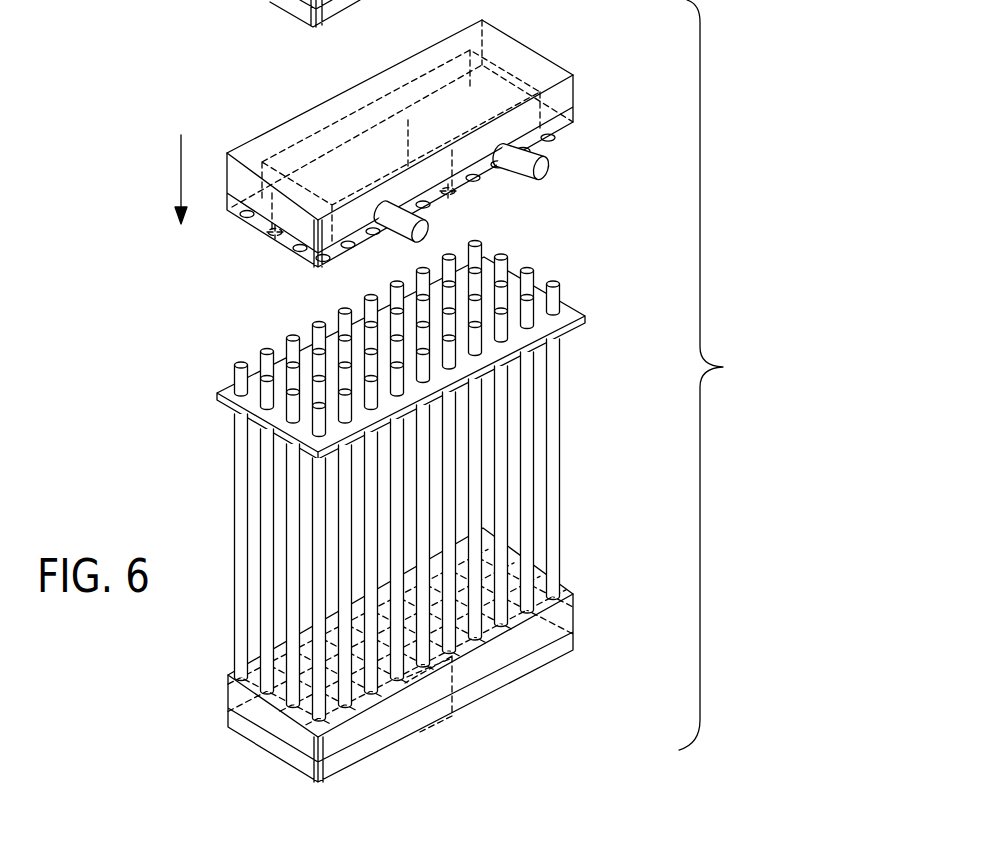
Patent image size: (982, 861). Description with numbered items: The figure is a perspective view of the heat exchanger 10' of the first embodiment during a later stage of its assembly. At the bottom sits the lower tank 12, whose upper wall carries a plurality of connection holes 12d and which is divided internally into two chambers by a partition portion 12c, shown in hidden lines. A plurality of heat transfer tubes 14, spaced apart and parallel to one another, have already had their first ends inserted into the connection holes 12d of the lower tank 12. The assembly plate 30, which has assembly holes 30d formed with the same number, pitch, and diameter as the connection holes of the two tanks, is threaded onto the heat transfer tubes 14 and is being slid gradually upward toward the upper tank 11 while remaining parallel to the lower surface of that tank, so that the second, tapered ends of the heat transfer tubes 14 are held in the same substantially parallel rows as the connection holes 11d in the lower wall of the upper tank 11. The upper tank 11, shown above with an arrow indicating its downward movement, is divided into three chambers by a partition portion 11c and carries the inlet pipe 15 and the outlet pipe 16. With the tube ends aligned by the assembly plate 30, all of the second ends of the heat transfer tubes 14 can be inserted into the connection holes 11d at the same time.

The heat exchanger 10' is at (432, 375).
The upper tank 11 is at (453, 174).
The partition portion 11c is at (293, 150).
The connection holes 11d is at (577, 122).
The inlet pipe 15 is at (401, 237).
The outlet pipe 16 is at (552, 166).
The assembly plate 30 is at (584, 318).
The assembly holes 30d is at (560, 303).
The heat transfer tubes 14 is at (454, 481).
The lower tank 12 is at (439, 657).
The connection holes 12d is at (553, 583).
The partition portion 12c is at (433, 690).